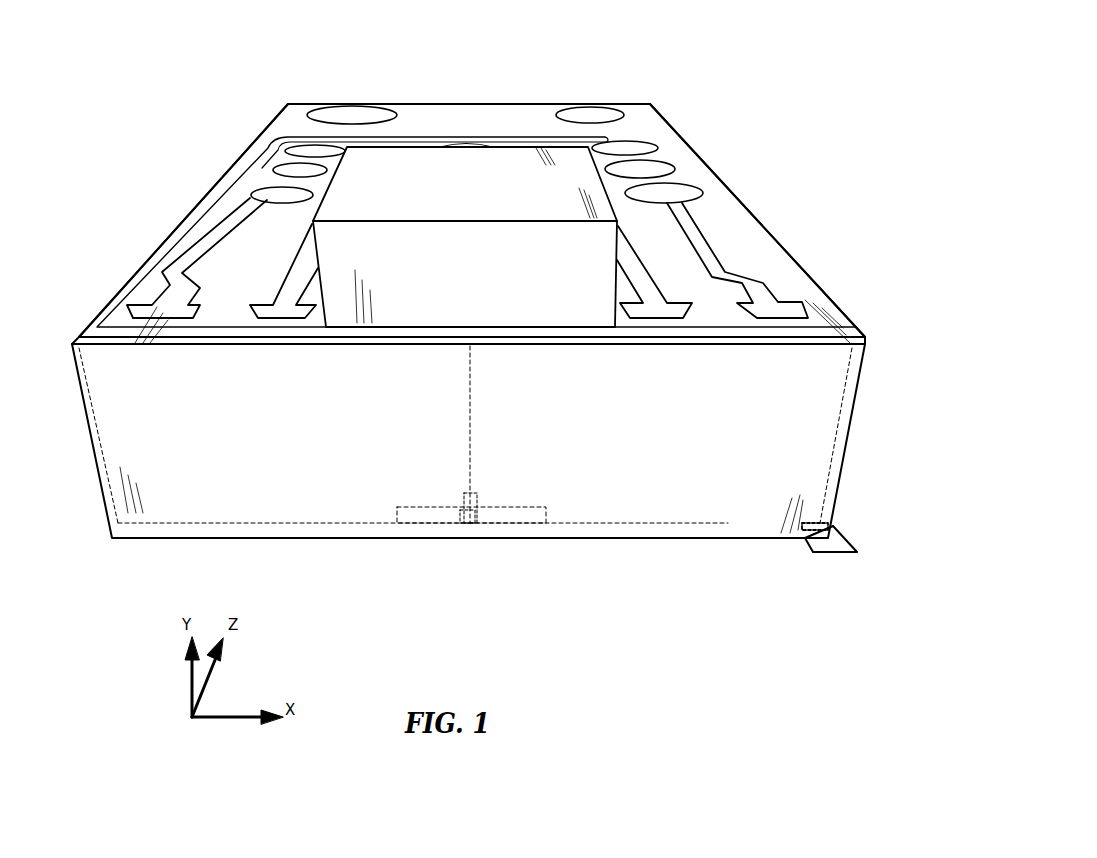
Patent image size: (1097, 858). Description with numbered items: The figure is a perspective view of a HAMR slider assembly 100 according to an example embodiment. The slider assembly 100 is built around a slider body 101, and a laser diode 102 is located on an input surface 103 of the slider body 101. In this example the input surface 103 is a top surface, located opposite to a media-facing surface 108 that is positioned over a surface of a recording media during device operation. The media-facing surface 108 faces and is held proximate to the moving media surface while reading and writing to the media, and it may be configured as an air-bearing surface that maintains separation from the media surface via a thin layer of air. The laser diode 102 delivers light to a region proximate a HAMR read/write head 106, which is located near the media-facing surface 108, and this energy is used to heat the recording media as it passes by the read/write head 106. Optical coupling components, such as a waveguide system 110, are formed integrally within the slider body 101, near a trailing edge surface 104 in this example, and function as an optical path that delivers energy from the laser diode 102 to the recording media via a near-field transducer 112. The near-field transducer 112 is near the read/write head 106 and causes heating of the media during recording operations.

The HAMR slider assembly 100 is at (656, 52).
The slider body 101 is at (262, 133).
The laser diode 102 is at (423, 157).
The input surface 103 is at (140, 287).
The trailing edge surface 104 is at (175, 512).
The HAMR read/write head 106 is at (475, 525).
The media-facing surface 108 is at (845, 557).
The waveguide system 110 is at (472, 415).
The near-field transducer 112 is at (467, 525).